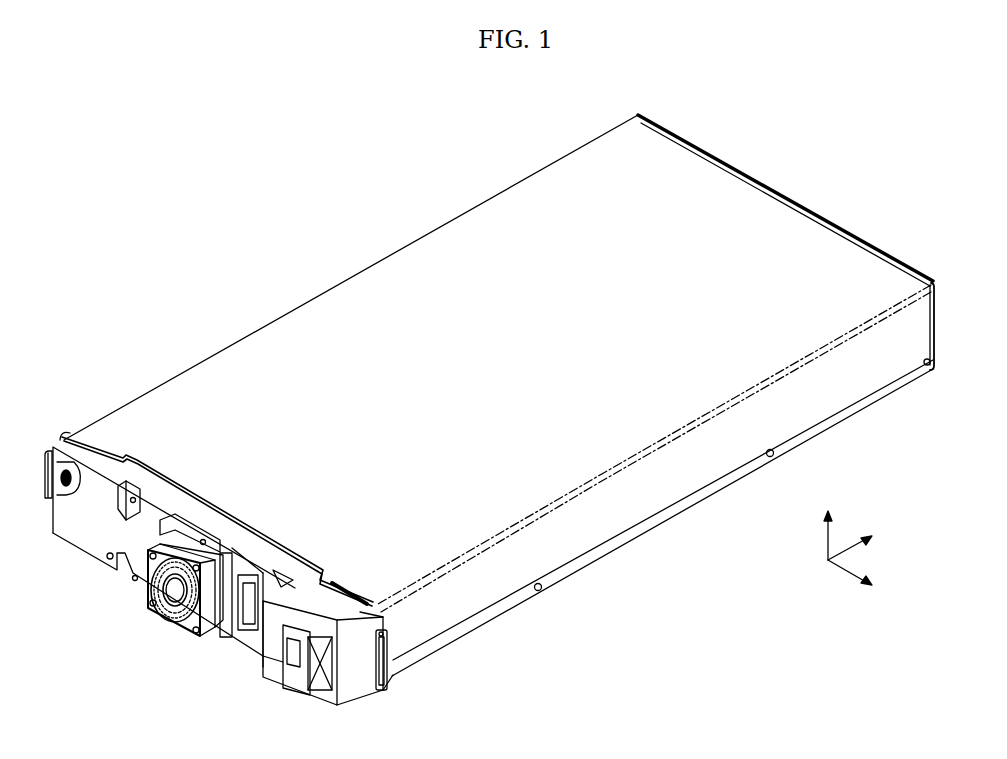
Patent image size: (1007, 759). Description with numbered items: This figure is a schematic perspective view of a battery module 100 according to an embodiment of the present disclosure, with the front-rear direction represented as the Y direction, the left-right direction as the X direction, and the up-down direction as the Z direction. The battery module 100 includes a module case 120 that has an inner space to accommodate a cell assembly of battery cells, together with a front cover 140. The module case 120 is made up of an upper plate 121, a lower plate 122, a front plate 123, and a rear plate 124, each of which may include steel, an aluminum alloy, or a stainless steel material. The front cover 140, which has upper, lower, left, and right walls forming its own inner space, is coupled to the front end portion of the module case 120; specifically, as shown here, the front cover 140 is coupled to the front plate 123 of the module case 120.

The battery module 100 is at (186, 136).
The module case 120 is at (285, 372).
The upper plate 121 is at (573, 183).
The lower plate 122 is at (503, 614).
The front plate 123 is at (387, 648).
The rear plate 124 is at (833, 224).
The front cover 140 is at (87, 530).